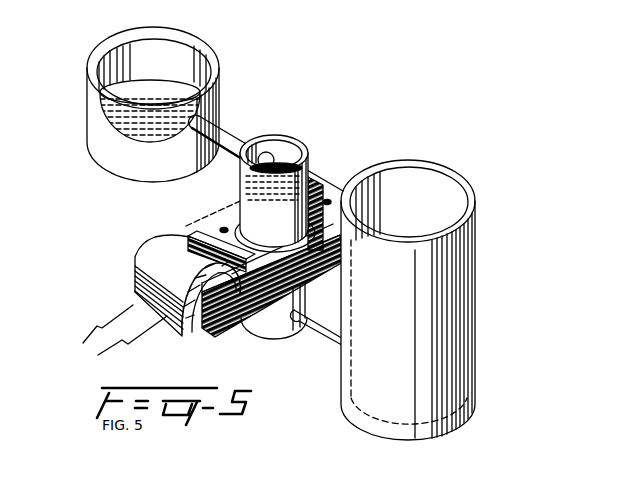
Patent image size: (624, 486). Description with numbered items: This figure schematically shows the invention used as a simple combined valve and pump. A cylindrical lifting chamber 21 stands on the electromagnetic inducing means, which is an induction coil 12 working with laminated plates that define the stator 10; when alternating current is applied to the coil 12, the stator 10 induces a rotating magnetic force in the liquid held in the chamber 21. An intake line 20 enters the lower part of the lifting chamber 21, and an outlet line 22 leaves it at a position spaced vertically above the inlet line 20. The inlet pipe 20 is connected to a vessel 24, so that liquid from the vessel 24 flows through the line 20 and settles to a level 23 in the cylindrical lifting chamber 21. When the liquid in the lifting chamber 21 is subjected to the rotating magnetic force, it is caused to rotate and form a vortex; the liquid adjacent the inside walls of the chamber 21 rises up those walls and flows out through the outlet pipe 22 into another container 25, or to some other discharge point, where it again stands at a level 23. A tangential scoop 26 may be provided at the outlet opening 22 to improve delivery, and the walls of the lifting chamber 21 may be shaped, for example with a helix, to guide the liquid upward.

The stator 10 is at (342, 172).
The induction coil 12 is at (152, 268).
The intake line 20 is at (320, 343).
The cylindrical lifting chamber 21 is at (308, 156).
The outlet line 22 is at (222, 127).
The level 23 is at (162, 88).
The vessel 24 is at (468, 194).
The container 25 is at (88, 98).
The tangential scoop 26 is at (268, 153).